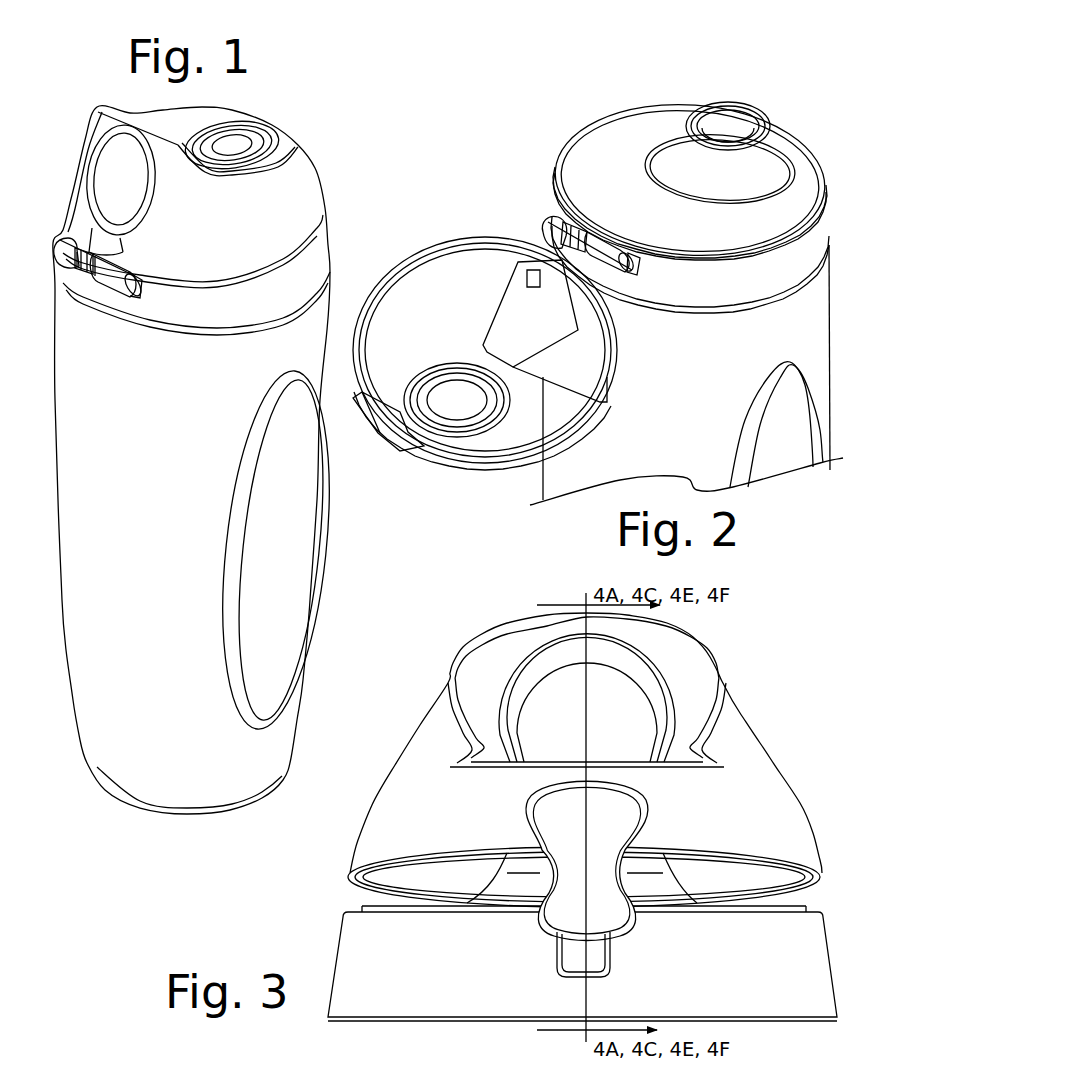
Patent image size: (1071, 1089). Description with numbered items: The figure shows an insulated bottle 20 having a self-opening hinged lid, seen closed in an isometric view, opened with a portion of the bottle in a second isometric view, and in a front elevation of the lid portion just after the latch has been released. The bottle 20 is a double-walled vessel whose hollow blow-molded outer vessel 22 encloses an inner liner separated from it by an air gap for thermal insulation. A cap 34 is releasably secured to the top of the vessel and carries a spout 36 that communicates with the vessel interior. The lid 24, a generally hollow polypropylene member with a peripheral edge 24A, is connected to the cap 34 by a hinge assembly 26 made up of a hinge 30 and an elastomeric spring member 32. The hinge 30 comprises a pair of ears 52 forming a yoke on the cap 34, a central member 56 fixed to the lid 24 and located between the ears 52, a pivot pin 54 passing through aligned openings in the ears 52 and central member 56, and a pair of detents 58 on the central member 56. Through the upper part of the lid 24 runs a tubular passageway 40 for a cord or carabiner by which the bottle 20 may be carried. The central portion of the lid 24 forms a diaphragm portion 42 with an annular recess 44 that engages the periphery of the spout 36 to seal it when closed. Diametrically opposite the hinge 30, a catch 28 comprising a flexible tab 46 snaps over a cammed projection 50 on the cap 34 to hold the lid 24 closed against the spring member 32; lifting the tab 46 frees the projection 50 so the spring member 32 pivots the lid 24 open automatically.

In FIG. 1, the bottle 20 is at (341, 163).
In FIG. 1, the outer vessel 22 is at (268, 543).
In FIG. 2, the outer vessel 22 is at (573, 460).
In FIG. 1, the lid 24 is at (263, 112).
In FIG. 2, the lid 24 is at (465, 452).
In FIG. 3, the lid 24 is at (737, 778).
In FIG. 1, the peripheral edge 24A is at (288, 253).
In FIG. 2, the peripheral edge 24A is at (468, 240).
In FIG. 3, the peripheral edge 24A is at (733, 850).
In FIG. 1, the hinge assembly 26 is at (120, 260).
In FIG. 2, the hinge assembly 26 is at (612, 268).
In FIG. 2, the catch 28 is at (395, 437).
In FIG. 3, the catch 28 is at (593, 847).
In FIG. 1, the hinge 30 is at (90, 264).
In FIG. 2, the hinge 30 is at (603, 250).
In FIG. 2, the spring member 32 is at (557, 270).
In FIG. 1, the cap 34 is at (315, 253).
In FIG. 2, the cap 34 is at (740, 278).
In FIG. 3, the cap 34 is at (387, 955).
In FIG. 2, the spout 36 is at (703, 107).
In FIG. 1, the tubular passageway 40 is at (115, 173).
In FIG. 3, the tubular passageway 40 is at (597, 707).
In FIG. 2, the diaphragm portion 42 is at (457, 397).
In FIG. 2, the annular recess 44 is at (423, 390).
In FIG. 3, the tab 46 is at (553, 913).
In FIG. 3, the cammed projection 50 is at (583, 957).
In FIG. 1, the ears 52 is at (62, 243).
In FIG. 2, the ears 52 is at (553, 223).
In FIG. 1, the pivot pin 54 is at (131, 294).
In FIG. 2, the pivot pin 54 is at (627, 265).
In FIG. 1, the central member 56 is at (97, 263).
In FIG. 2, the central member 56 is at (580, 237).
In FIG. 1, the detents 58 is at (89, 266).